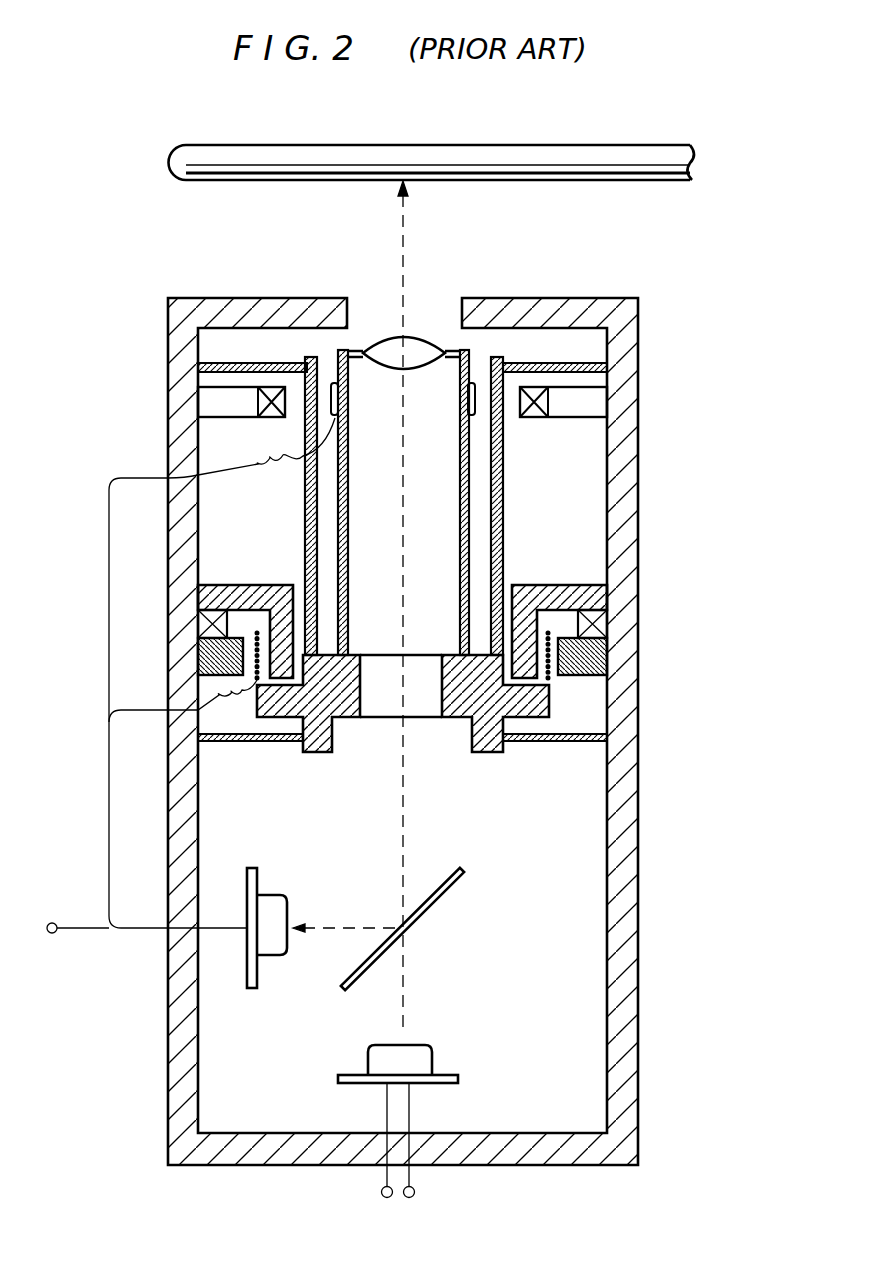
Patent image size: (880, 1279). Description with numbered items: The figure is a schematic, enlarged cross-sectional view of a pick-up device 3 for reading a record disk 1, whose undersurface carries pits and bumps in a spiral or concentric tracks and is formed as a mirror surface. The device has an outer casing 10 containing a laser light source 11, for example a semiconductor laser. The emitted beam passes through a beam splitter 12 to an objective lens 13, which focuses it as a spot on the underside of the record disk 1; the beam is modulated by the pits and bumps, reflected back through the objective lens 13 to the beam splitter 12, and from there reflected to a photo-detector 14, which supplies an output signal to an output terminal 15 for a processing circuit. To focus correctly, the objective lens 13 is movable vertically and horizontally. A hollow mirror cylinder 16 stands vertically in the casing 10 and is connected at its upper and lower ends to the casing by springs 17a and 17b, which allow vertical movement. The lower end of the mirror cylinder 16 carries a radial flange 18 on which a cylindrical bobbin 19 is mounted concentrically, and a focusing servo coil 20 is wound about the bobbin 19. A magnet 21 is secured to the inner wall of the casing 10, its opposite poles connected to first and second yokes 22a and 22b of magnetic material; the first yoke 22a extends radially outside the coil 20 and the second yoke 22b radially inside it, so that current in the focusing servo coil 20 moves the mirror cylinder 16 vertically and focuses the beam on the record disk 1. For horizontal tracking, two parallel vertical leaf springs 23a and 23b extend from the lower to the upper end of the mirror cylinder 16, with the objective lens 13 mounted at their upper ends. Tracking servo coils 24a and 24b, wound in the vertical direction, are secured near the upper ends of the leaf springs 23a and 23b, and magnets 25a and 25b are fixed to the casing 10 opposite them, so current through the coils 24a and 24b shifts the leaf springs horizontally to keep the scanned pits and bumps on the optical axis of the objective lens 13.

The record disk 1 is at (622, 145).
The pick-up device 3 is at (687, 275).
The outer casing 10 is at (628, 546).
The laser light source 11 is at (430, 1047).
The beam splitter 12 is at (440, 900).
The objective lens 13 is at (391, 362).
The photo-detector 14 is at (280, 955).
The output terminal 15 is at (54, 933).
The mirror cylinder 16 is at (503, 512).
The spring 17a is at (238, 363).
The spring 17b is at (240, 742).
The radial flange 18 is at (535, 713).
The cylindrical bobbin 19 is at (547, 600).
The focusing servo coil 20 is at (548, 680).
The magnet 21 is at (592, 625).
The first yoke 22a is at (593, 660).
The second yoke 22b is at (470, 700).
The leaf spring 23a is at (348, 492).
The leaf spring 23b is at (466, 578).
The tracking servo coil 24a is at (334, 383).
The tracking servo coil 24b is at (472, 383).
The magnet 25a is at (270, 418).
The magnet 25b is at (537, 400).